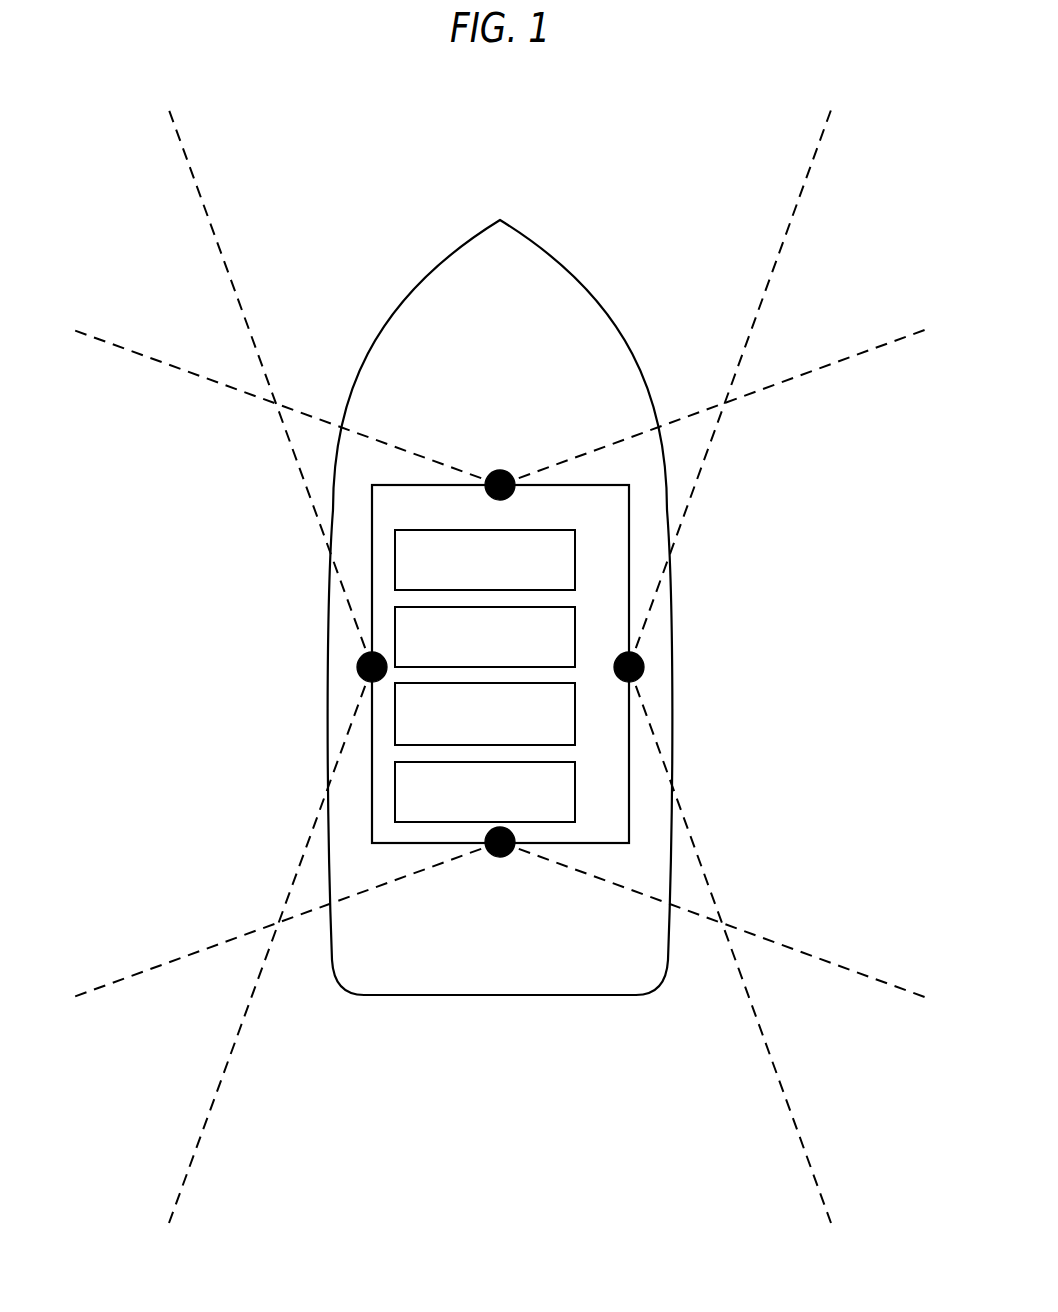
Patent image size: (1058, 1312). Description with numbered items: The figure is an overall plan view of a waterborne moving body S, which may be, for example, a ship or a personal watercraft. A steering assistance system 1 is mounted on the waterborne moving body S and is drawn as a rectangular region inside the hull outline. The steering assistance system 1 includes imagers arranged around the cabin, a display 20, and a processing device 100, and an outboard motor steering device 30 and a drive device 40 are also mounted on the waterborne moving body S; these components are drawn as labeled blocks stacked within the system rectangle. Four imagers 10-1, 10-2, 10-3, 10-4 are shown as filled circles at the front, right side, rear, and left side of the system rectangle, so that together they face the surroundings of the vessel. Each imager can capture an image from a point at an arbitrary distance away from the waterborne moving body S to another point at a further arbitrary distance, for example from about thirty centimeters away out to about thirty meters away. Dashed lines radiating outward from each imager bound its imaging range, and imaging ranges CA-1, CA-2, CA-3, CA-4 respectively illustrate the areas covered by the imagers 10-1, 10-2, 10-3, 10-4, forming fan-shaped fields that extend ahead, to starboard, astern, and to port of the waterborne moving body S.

The steering assistance system 1 is at (589, 518).
The waterborne moving body S is at (397, 311).
The imager 10-1 is at (508, 470).
The imager 10-2 is at (644, 658).
The imager 10-3 is at (500, 858).
The imager 10-4 is at (360, 675).
The display 20 is at (575, 559).
The outboard motor steering device 30 is at (575, 637).
The drive device 40 is at (575, 713).
The processing device 100 is at (575, 792).
The imaging range CA-1 is at (470, 156).
The imaging range CA-2 is at (792, 683).
The imaging range CA-3 is at (470, 1141).
The imaging range CA-4 is at (138, 683).